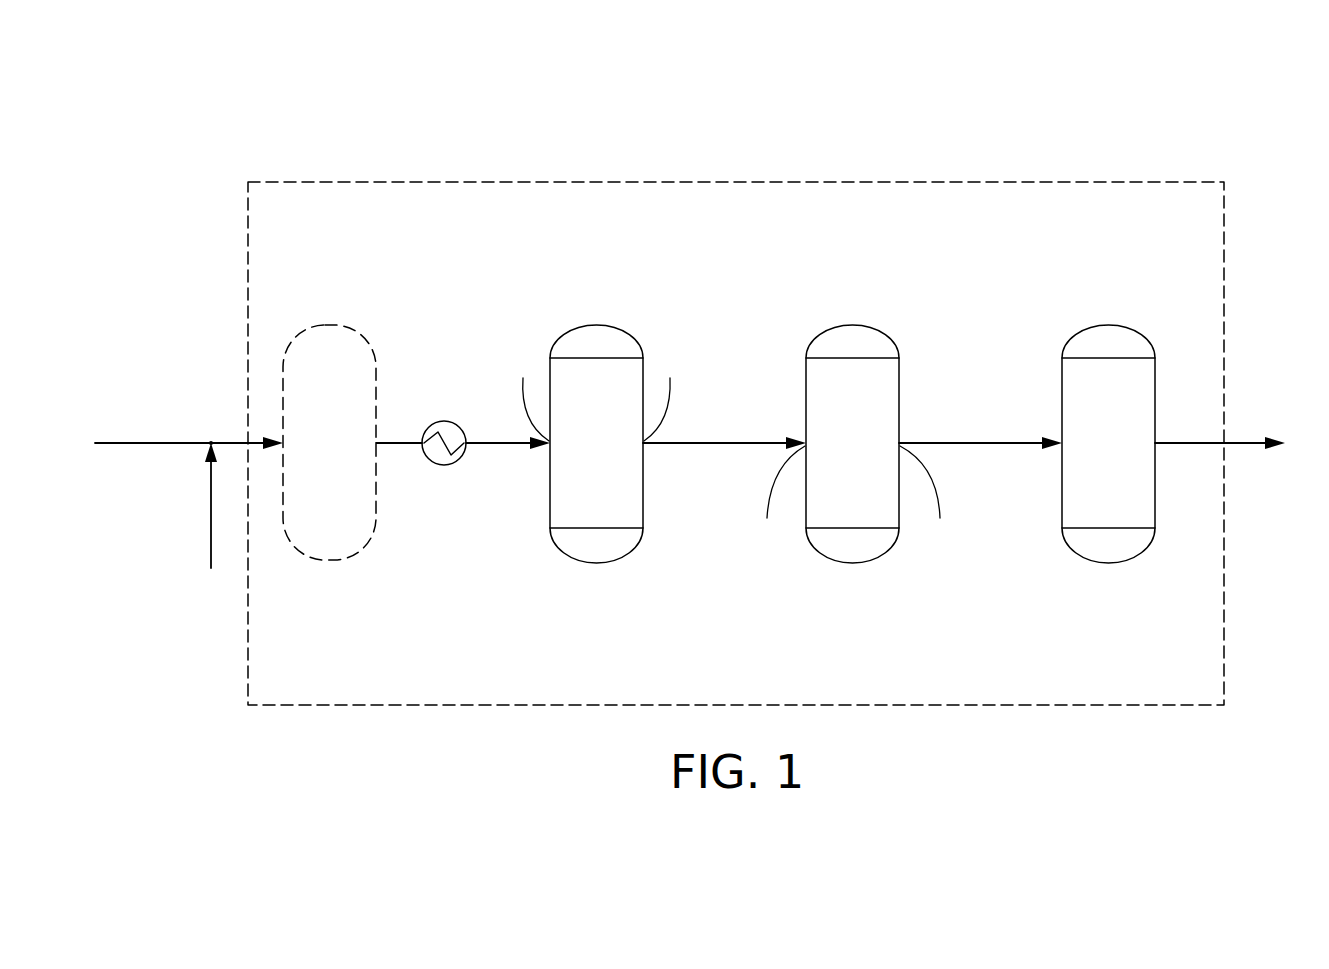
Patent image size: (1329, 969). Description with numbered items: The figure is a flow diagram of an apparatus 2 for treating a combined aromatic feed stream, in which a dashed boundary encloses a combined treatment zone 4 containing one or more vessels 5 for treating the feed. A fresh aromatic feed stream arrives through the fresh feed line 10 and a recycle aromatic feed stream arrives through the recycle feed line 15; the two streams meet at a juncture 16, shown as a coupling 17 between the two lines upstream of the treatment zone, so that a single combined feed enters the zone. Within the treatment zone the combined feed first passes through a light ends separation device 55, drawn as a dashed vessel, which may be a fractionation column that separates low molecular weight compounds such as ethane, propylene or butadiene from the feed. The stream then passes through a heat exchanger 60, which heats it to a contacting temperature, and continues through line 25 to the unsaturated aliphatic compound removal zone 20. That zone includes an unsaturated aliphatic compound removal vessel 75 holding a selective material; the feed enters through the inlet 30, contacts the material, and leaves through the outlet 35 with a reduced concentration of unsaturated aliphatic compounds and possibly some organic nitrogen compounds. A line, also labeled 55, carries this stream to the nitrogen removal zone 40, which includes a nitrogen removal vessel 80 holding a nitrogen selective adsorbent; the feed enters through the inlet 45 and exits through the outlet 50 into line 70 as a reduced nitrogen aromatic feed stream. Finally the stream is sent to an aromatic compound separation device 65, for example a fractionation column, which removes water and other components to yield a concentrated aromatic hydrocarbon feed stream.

The apparatus 2 is at (1258, 128).
The combined treatment zone 4 is at (1115, 181).
The vessel 5 is at (543, 578).
The fresh feed line 10 is at (124, 440).
The recycle feed line 15 is at (210, 556).
The juncture 16 is at (211, 443).
The coupling 17 is at (212, 440).
The unsaturated aliphatic compound removal zone 20 is at (598, 340).
The line 25 is at (483, 440).
The unsaturated aliphatic compound removal zone inlet 30 is at (529, 392).
The unsaturated aliphatic compound removal zone outlet 35 is at (667, 392).
The nitrogen removal zone 40 is at (853, 326).
The nitrogen removal zone inlet 45 is at (780, 497).
The nitrogen removal zone outlet 50 is at (929, 497).
The light ends separation device 55 is at (330, 326).
The heat exchanger 60 is at (444, 421).
The aromatic compound separation device 65 is at (1108, 326).
The line 70 is at (978, 448).
The unsaturated aliphatic compound removal vessel 75 is at (573, 507).
The nitrogen removal vessel 80 is at (856, 549).